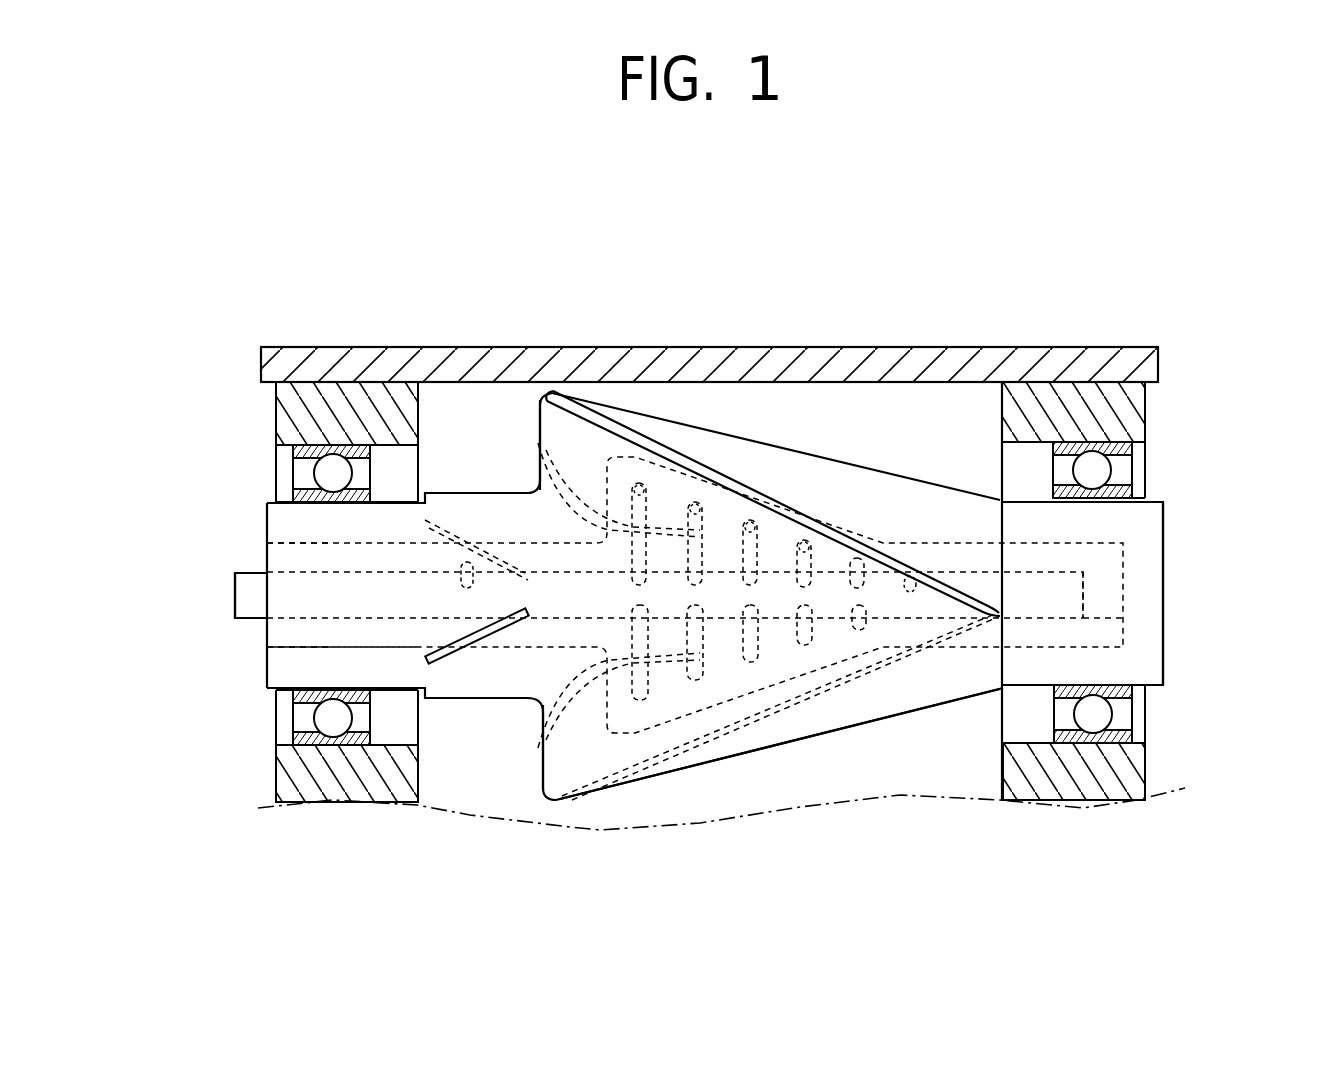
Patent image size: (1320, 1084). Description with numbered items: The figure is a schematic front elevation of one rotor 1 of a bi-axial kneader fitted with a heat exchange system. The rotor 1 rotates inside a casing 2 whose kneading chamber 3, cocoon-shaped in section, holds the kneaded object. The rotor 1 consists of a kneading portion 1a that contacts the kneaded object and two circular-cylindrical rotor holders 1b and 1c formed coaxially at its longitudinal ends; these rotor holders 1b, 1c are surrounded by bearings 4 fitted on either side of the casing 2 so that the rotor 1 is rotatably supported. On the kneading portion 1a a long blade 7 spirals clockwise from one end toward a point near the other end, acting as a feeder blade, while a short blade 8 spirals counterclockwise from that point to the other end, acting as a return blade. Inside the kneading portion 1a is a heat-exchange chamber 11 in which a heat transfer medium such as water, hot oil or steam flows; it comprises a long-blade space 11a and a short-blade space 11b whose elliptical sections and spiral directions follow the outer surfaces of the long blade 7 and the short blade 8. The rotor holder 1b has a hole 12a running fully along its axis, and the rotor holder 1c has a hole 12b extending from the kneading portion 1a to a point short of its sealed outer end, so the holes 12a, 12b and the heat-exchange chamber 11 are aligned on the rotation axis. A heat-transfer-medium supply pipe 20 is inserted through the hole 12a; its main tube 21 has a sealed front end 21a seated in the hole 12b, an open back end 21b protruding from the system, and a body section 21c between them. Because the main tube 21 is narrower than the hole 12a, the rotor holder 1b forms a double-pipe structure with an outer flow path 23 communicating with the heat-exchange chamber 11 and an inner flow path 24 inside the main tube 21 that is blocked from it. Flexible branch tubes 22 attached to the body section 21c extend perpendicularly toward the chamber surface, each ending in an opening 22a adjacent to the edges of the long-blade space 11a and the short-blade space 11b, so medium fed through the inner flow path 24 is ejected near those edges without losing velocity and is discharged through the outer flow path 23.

The rotor 1 is at (1185, 522).
The kneading portion 1a is at (906, 476).
The rotor holder 1b is at (256, 679).
The rotor holder 1c is at (1170, 686).
The casing 2 is at (862, 347).
The kneading chamber 3 is at (887, 433).
The bearings 4 is at (292, 462).
The long blade 7 is at (735, 468).
The short blade 8 is at (452, 520).
The heat-exchange chamber 11 is at (470, 897).
The long-blade space 11a is at (625, 735).
The short-blade space 11b is at (480, 617).
The hole 12a is at (278, 652).
The hole 12b is at (1124, 620).
The heat-transfer-medium supply pipe 20 is at (235, 557).
The main tube 21 is at (244, 612).
The front end 21a is at (1124, 578).
The back end 21b is at (238, 588).
The body section 21c is at (467, 560).
The branch tubes 22 is at (555, 565).
The opening 22a is at (693, 502).
The outer flow path 23 is at (293, 550).
The inner flow path 24 is at (300, 647).